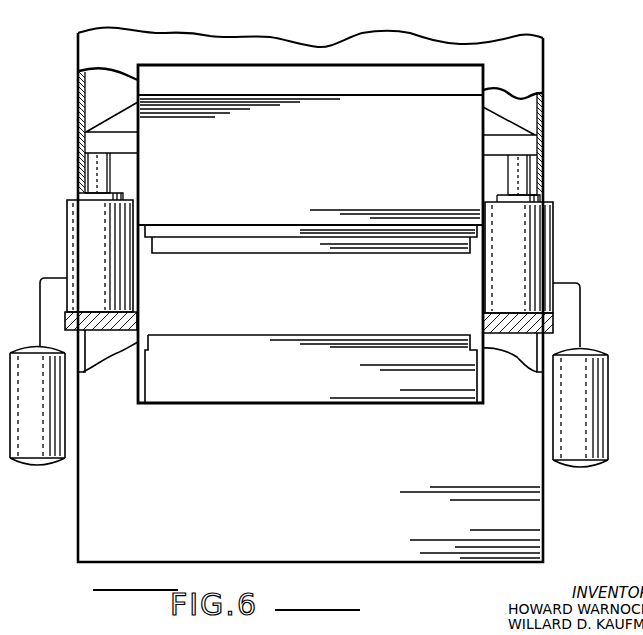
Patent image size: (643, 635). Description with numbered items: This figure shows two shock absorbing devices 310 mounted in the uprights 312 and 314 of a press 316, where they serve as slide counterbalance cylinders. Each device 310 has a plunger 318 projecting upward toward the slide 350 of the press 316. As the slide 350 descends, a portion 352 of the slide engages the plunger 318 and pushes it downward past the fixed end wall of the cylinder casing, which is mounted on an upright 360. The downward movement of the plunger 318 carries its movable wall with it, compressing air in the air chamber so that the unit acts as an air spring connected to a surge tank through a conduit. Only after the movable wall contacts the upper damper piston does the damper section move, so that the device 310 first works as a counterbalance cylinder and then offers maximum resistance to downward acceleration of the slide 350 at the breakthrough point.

The shock absorbing device 310 is at (60, 240).
The upright 312 is at (533, 176).
The upright 314 is at (82, 170).
The press 316 is at (533, 67).
The plunger 318 is at (110, 173).
The slide 350 is at (325, 182).
The portion of the slide 352 is at (93, 140).
The upright 360 is at (135, 318).